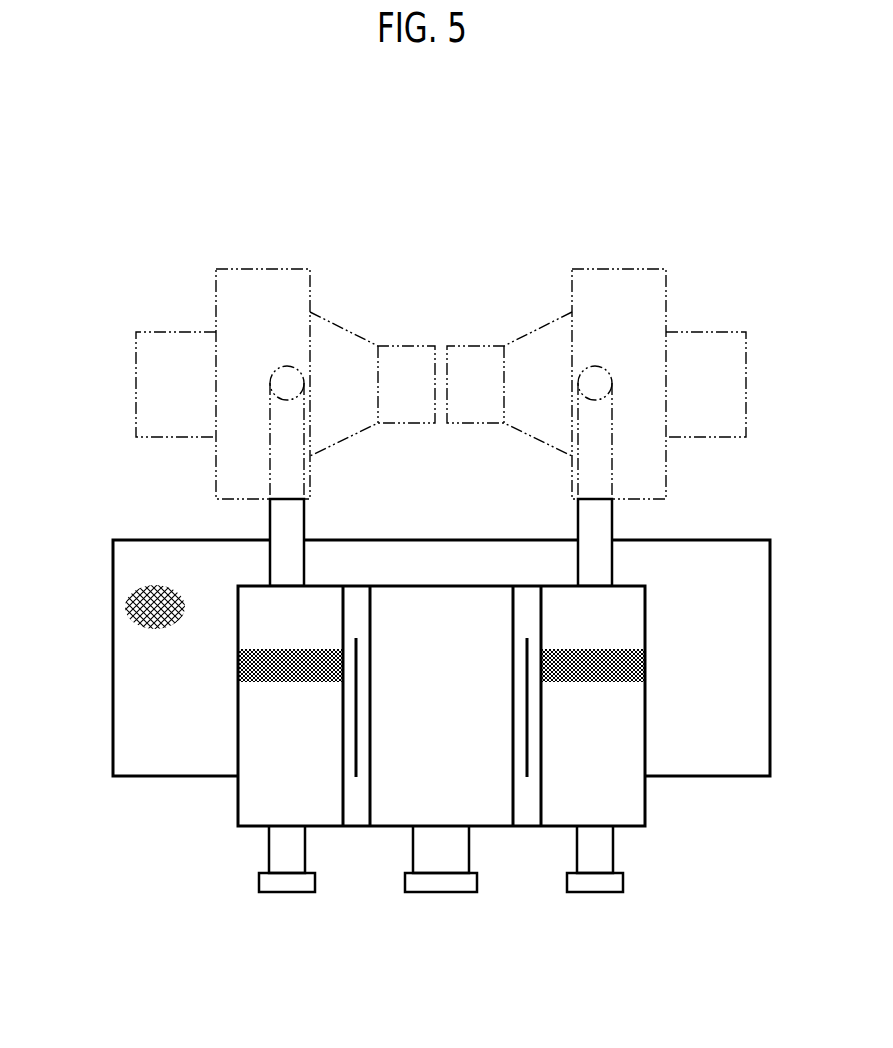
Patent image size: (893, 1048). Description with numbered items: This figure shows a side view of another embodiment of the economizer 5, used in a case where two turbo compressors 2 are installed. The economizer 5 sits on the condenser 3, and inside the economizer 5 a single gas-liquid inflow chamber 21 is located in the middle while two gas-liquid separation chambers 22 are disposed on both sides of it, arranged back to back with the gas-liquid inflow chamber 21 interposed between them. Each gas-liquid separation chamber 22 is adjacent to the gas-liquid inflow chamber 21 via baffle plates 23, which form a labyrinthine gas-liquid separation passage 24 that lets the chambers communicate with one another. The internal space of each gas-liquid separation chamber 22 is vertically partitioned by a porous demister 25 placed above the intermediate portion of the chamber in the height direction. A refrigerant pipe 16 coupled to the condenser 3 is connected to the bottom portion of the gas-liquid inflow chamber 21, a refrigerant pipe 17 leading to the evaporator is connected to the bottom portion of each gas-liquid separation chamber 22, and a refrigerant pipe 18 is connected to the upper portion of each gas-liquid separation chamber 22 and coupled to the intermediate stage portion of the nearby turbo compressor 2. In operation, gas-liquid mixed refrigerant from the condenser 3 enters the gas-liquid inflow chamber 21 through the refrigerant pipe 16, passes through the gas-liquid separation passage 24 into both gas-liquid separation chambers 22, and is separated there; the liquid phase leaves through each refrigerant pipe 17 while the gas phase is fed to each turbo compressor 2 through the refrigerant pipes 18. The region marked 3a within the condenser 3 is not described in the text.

The turbo compressor 2 is at (254, 268).
The condenser 3 is at (150, 539).
The sound absorbing material 3a is at (130, 607).
The economizer 5 is at (438, 586).
The refrigerant pipe 16 is at (470, 848).
The refrigerant pipe 17 is at (268, 851).
The refrigerant pipe 18 is at (306, 517).
The gas-liquid inflow chamber 21 is at (450, 738).
The gas-liquid separation chamber 22 is at (308, 738).
The baffle plate 23 is at (343, 620).
The gas-liquid separation passage 24 is at (348, 768).
The demister 25 is at (238, 658).